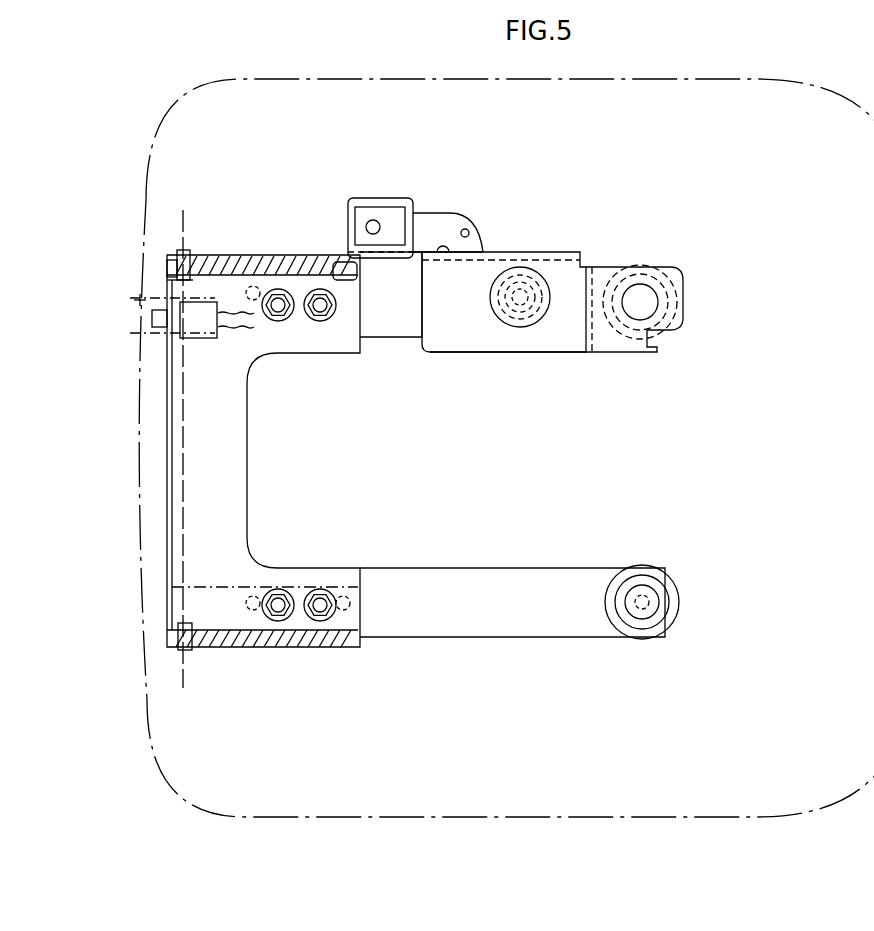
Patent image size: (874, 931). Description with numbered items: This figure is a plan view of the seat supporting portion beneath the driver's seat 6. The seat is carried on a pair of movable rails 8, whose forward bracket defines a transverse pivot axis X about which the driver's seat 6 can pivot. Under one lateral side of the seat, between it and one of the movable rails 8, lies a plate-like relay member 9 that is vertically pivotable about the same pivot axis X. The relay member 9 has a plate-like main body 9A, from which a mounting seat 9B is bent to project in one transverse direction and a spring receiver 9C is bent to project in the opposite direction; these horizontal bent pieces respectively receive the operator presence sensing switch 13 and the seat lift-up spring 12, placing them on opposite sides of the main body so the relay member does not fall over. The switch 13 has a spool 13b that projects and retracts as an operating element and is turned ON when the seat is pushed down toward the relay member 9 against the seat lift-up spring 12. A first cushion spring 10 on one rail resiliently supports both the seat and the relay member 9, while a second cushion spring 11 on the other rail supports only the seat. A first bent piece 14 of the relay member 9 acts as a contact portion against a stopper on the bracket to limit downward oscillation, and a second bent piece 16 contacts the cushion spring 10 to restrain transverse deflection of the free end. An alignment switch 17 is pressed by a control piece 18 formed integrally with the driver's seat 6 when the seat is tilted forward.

The driver's seat 6 is at (140, 438).
The pivot axis X is at (182, 232).
The movable rails 8 is at (388, 340).
The relay member 9 is at (497, 356).
The main body 9A is at (525, 252).
The mounting seat 9B is at (413, 202).
The spring receiver 9C is at (452, 352).
The first cushion spring 10 is at (680, 300).
The second cushion spring 11 is at (680, 603).
The seat lift-up spring 12 is at (523, 328).
The operator presence sensing switch 13 is at (366, 197).
The spool 13b is at (378, 222).
The first bent piece 14 is at (350, 278).
The second bent piece 16 is at (660, 347).
The alignment switch 17 is at (152, 318).
The control piece 18 is at (135, 332).